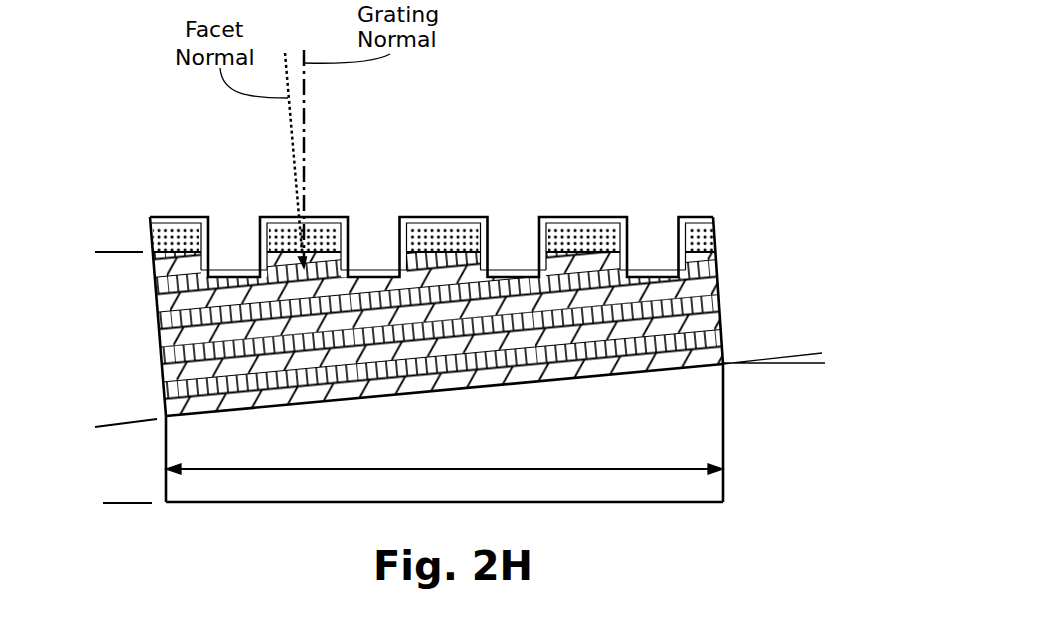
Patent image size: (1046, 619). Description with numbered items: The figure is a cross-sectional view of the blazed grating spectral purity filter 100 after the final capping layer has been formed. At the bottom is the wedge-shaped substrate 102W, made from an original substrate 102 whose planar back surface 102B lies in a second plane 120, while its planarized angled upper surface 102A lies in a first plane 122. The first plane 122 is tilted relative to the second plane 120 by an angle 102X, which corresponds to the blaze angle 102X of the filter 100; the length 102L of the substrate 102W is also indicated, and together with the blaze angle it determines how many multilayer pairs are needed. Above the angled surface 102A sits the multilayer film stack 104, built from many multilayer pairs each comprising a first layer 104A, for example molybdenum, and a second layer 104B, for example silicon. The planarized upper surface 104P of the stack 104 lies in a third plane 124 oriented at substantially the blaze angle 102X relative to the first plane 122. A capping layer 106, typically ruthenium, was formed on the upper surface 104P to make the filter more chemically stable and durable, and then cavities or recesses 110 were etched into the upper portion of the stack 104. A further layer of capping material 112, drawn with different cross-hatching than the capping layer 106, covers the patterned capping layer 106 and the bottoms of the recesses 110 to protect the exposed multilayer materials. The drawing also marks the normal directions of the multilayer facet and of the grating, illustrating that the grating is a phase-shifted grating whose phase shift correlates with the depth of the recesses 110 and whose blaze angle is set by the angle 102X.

The blazed grating spectral purity filter 100 is at (176, 108).
The substrate 102 is at (490, 461).
The angled surface 102A is at (327, 403).
The back surface 102B is at (562, 502).
The length 102L is at (303, 469).
The wedge-shaped substrate 102W is at (697, 435).
The angle 102X is at (825, 360).
The multilayer film stack 104 is at (494, 268).
The first layer 104A is at (715, 318).
The second layer 104B is at (715, 298).
The planarized upper surface 104P is at (488, 218).
The capping layer 106 is at (147, 228).
The cavities or recesses 110 is at (363, 278).
The layer of capping material 112 is at (190, 218).
The second plane 120 is at (133, 503).
The first plane 122 is at (108, 425).
The third plane 124 is at (113, 252).